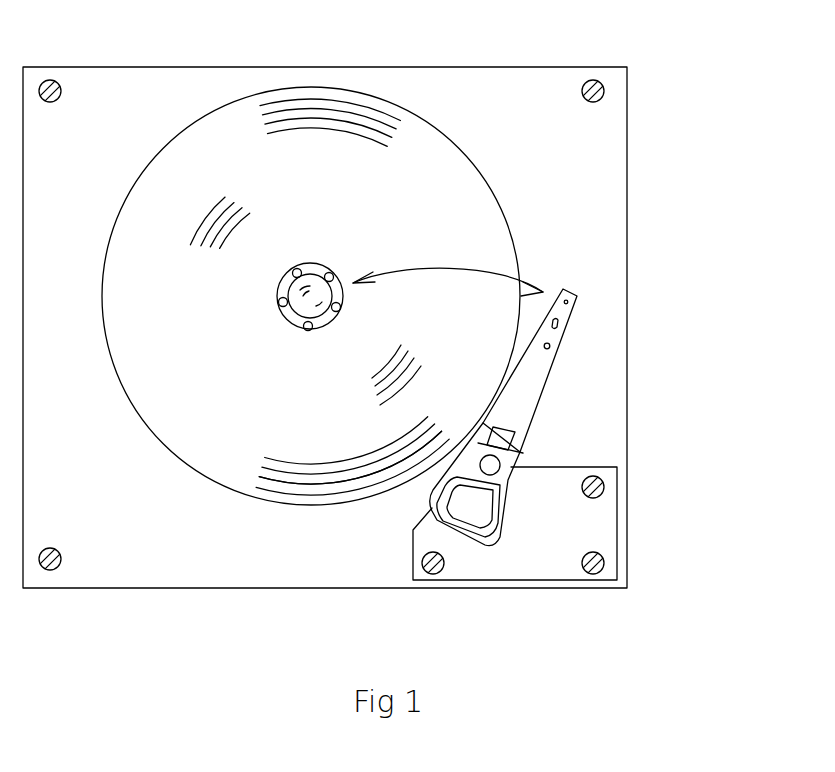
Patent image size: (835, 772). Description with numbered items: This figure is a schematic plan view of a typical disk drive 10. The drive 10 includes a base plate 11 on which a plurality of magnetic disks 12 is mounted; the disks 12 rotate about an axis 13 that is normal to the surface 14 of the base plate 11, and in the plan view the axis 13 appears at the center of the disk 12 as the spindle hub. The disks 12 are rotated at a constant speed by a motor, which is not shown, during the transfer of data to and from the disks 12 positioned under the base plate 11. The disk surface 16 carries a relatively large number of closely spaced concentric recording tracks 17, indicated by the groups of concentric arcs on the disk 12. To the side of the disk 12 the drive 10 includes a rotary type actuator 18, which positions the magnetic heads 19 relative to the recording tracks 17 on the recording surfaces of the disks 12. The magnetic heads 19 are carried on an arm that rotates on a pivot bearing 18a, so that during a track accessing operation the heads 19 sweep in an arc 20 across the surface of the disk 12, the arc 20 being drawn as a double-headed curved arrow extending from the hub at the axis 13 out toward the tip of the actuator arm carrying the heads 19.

The disk drive 10 is at (503, 634).
The base plate 11 is at (627, 393).
The magnetic disk 12 is at (262, 90).
The axis 13 is at (338, 273).
The surface of the base plate 14 is at (551, 155).
The disk surface 16 is at (300, 439).
The recording tracks 17 is at (340, 482).
The rotary type actuator 18 is at (510, 540).
The pivot bearing 18a is at (512, 450).
The magnetic heads 19 is at (573, 308).
The arc 20 is at (455, 271).